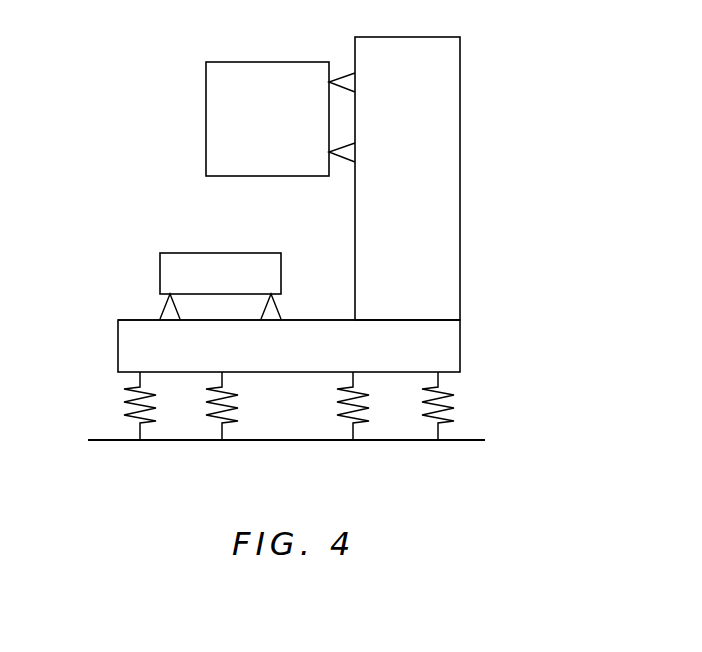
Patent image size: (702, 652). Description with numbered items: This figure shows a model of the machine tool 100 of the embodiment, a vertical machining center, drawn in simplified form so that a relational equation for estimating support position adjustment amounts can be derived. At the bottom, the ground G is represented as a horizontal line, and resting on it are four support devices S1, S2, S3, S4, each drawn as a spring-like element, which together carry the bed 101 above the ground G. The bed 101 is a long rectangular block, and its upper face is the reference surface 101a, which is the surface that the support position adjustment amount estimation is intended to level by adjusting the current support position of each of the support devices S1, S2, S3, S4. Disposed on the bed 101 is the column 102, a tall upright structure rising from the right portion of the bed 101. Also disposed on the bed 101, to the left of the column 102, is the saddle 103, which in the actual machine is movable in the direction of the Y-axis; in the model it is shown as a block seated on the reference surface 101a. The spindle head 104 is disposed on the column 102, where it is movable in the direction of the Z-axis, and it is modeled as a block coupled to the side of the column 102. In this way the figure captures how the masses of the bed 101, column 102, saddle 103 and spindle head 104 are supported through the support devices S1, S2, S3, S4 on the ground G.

The machine tool 100 is at (560, 55).
The bed 101 is at (461, 348).
The reference surface 101a is at (147, 320).
The column 102 is at (461, 177).
The saddle 103 is at (160, 271).
The spindle head 104 is at (209, 136).
The ground G is at (93, 440).
The support device S1 is at (140, 424).
The support device S2 is at (222, 424).
The support device S3 is at (353, 424).
The support device S4 is at (438, 424).